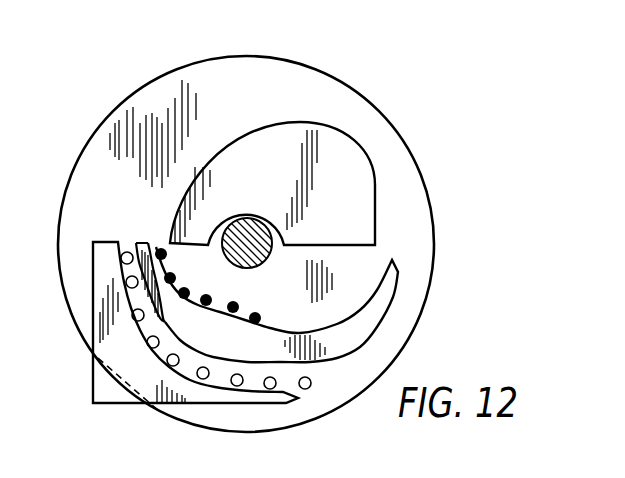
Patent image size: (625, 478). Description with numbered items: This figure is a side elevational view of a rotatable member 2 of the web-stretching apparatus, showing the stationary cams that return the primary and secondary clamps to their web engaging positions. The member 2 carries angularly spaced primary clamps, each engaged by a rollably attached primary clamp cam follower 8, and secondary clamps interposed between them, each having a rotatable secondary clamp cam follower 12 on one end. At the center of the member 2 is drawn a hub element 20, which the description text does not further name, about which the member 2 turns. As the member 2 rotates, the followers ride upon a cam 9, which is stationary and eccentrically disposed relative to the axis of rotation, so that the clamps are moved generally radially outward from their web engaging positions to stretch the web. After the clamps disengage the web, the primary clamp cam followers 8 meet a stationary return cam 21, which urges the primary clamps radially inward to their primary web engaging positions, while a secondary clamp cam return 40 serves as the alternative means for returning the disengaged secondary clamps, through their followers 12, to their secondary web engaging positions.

The rotatable member 2 is at (422, 165).
The cam 9 is at (330, 222).
The shaft 20 is at (245, 245).
The stationary return cam 21 is at (230, 349).
The primary clamp cam follower 8 is at (259, 302).
The secondary clamp cam return 40 is at (131, 366).
The secondary clamp cam follower 12 is at (312, 383).